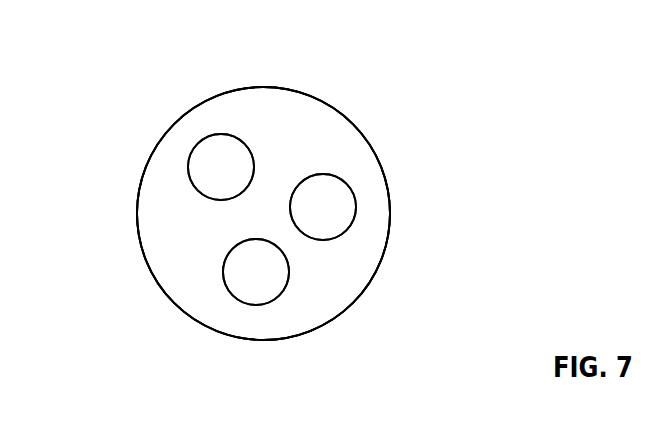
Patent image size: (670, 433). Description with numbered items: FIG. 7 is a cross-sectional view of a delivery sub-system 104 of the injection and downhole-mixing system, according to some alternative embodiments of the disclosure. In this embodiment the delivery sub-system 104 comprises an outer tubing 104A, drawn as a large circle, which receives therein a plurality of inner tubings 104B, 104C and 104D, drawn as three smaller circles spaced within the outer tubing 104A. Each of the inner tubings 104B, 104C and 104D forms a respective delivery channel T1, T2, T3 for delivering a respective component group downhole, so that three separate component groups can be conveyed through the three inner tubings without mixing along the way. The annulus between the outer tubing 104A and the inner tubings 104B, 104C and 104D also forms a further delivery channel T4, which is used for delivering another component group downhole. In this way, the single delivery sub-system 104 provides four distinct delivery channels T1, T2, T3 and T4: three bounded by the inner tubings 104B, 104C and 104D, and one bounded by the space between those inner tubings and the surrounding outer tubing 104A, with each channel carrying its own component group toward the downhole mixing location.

The delivery sub-system 104 is at (112, 120).
The outer tubing 104A is at (378, 155).
The inner tubing 104B is at (202, 163).
The inner tubing 104C is at (242, 285).
The inner tubing 104D is at (347, 212).
The delivery channel T1 is at (217, 150).
The delivery channel T2 is at (323, 188).
The delivery channel T3 is at (270, 285).
The delivery channel T4 is at (318, 283).